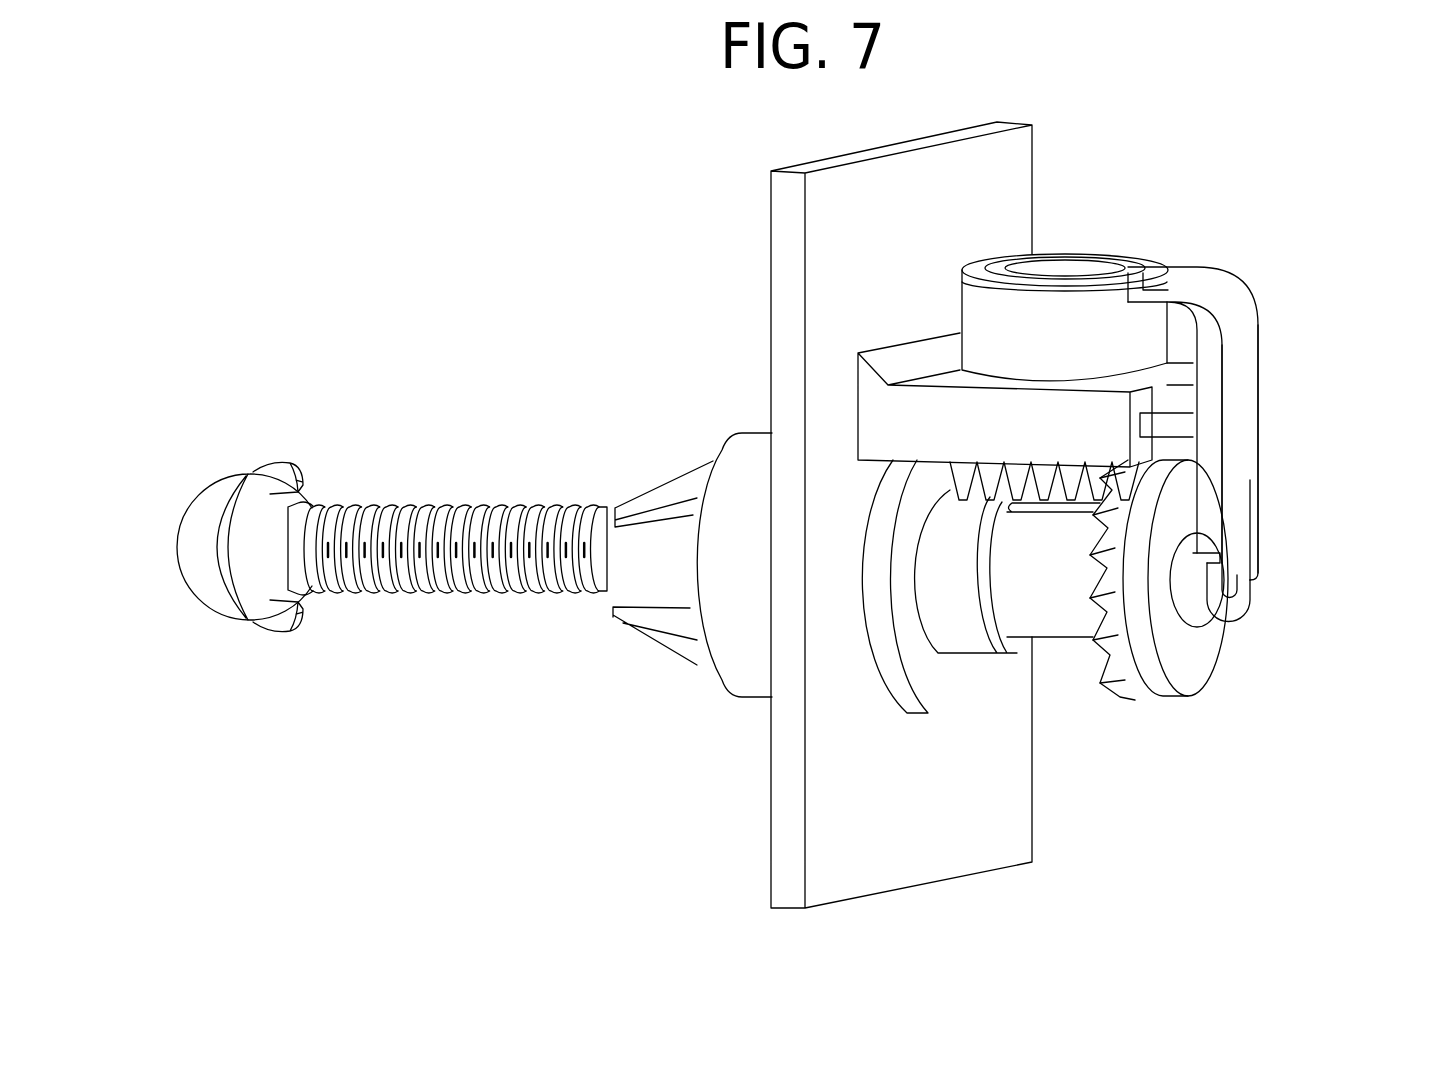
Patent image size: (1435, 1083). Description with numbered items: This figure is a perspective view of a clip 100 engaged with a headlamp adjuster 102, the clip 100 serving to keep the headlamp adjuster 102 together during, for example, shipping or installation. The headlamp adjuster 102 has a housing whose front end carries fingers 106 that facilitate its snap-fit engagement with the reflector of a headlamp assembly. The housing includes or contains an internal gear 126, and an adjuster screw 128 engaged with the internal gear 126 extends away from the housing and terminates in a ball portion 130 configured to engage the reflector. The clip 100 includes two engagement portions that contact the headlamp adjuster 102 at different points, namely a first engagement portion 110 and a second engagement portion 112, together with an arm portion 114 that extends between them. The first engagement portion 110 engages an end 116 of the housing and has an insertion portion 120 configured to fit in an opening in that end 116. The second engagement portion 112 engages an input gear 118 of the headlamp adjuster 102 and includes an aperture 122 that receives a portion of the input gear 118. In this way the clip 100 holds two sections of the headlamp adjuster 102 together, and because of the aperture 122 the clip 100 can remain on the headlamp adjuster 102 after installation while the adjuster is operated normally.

The clip 100 is at (1275, 310).
The headlamp adjuster 102 is at (712, 400).
The fingers 106 is at (647, 487).
The first engagement portion 110 is at (1278, 575).
The second engagement portion 112 is at (1108, 240).
The arm portion 114 is at (1243, 393).
The end of the housing 116 is at (1202, 672).
The input gear 118 is at (898, 415).
The insertion portion 120 is at (1242, 590).
The aperture 122 is at (1062, 265).
The internal gear 126 is at (1116, 682).
The adjuster screw 128 is at (400, 635).
The ball portion 130 is at (193, 597).